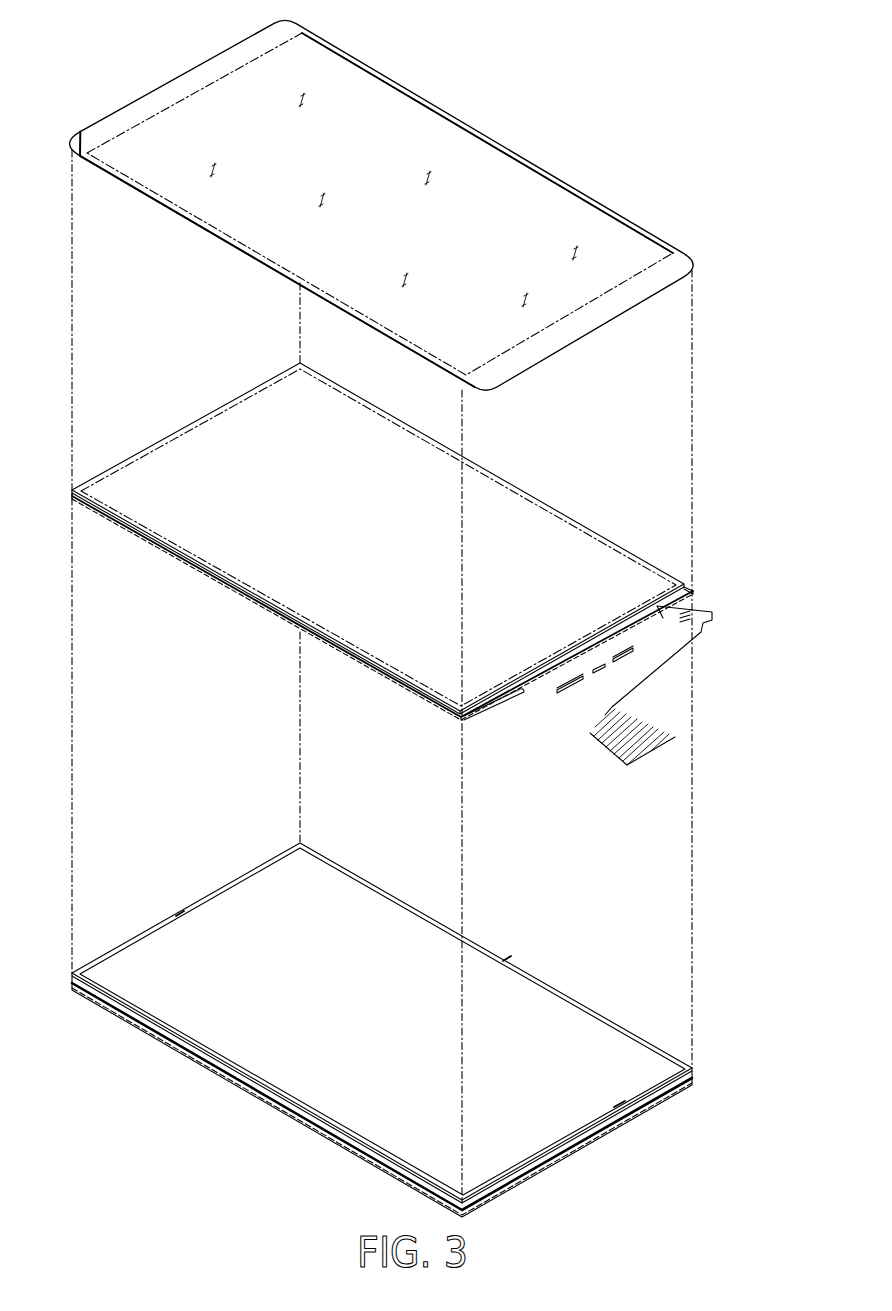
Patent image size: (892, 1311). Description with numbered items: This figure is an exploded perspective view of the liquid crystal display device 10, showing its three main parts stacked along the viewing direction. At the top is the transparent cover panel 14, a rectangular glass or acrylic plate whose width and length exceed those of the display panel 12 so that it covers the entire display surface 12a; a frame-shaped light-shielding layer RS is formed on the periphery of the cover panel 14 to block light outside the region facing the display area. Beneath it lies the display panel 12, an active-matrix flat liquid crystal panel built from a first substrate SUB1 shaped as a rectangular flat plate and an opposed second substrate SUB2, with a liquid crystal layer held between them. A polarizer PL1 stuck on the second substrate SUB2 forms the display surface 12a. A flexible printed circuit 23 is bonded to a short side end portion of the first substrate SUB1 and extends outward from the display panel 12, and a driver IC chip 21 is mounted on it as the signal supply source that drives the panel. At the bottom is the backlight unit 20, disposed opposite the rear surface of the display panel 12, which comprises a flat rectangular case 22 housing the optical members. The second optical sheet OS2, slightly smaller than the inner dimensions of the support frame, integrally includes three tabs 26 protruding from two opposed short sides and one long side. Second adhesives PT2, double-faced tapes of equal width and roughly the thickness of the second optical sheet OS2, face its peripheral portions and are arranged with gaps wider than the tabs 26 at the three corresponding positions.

The display device 10 is at (683, 216).
The cover panel 14 is at (500, 180).
The light-shielding layer RS is at (150, 97).
The display panel 12 is at (558, 497).
The polarizer PL1 is at (203, 437).
The display surface 12a is at (227, 552).
The second substrate SUB2 is at (423, 674).
The first substrate SUB1 is at (477, 712).
The driver IC chip 21 is at (527, 693).
The flexible printed circuit 23 is at (613, 707).
The backlight unit 20 is at (183, 1090).
The second optical sheet OS2 is at (257, 903).
The second adhesive PT2 is at (590, 1010).
The case 22 is at (323, 1138).
The tab 26 is at (183, 913).